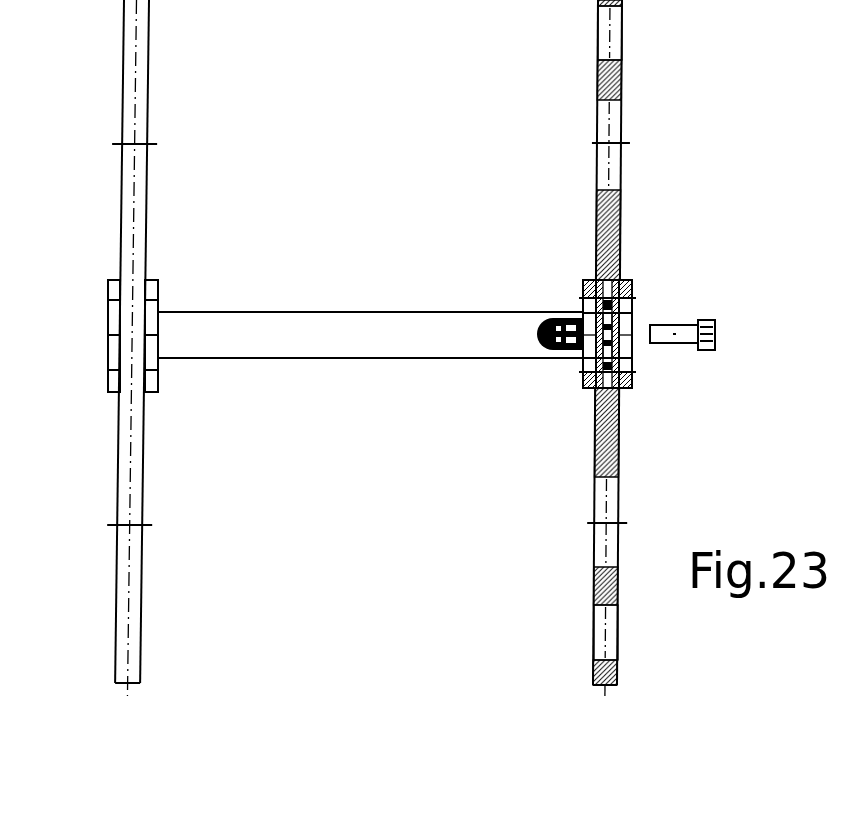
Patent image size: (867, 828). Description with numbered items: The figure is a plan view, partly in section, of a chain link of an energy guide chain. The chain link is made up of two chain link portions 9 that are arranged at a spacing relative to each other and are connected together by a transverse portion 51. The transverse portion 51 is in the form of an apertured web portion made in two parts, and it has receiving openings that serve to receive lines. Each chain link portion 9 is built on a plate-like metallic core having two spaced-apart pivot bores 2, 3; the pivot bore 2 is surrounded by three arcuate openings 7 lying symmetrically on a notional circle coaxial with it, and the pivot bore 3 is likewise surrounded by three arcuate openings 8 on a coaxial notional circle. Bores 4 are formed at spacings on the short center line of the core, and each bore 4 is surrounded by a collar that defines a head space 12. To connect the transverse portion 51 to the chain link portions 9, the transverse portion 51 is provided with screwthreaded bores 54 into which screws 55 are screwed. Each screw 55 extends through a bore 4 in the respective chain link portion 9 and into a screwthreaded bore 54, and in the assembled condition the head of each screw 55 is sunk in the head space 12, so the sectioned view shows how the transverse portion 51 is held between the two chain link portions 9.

The pivot bore 2 is at (598, 118).
The pivot bore 3 is at (610, 505).
The bore 4 is at (635, 333).
The arcuate opening 7 is at (620, 36).
The arcuate opening 8 is at (615, 632).
The chain link portion 9 is at (103, 192).
The head space 12 is at (640, 323).
The transverse portion 51 is at (357, 345).
The screwthreaded bore 54 is at (523, 418).
The screw 55 is at (688, 345).